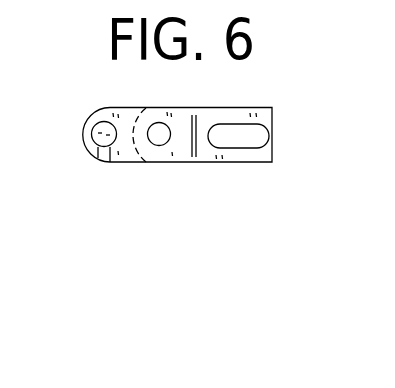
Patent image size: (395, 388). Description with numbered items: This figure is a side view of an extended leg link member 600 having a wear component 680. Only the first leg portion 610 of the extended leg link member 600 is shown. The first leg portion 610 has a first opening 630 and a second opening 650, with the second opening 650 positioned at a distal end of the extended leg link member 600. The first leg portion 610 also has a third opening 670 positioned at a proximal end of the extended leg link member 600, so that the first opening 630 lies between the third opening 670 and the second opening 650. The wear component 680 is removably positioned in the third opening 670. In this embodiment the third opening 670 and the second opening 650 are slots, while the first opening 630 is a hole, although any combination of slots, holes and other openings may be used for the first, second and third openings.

The extended leg link member 600 is at (243, 192).
The first leg portion 610 is at (178, 121).
The first opening 630 is at (160, 136).
The second opening 650 is at (250, 133).
The third opening 670 is at (103, 147).
The wear component 680 is at (92, 134).